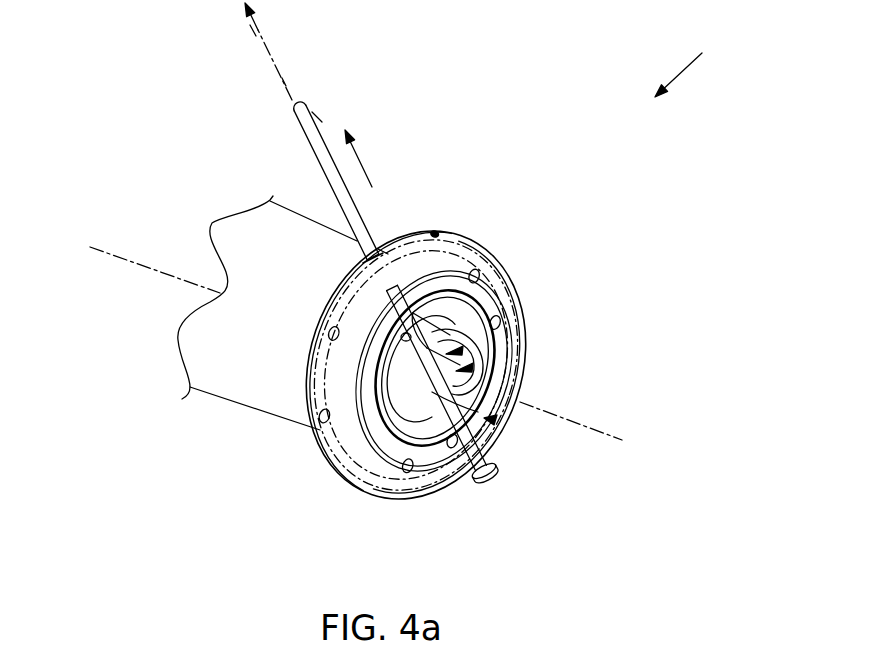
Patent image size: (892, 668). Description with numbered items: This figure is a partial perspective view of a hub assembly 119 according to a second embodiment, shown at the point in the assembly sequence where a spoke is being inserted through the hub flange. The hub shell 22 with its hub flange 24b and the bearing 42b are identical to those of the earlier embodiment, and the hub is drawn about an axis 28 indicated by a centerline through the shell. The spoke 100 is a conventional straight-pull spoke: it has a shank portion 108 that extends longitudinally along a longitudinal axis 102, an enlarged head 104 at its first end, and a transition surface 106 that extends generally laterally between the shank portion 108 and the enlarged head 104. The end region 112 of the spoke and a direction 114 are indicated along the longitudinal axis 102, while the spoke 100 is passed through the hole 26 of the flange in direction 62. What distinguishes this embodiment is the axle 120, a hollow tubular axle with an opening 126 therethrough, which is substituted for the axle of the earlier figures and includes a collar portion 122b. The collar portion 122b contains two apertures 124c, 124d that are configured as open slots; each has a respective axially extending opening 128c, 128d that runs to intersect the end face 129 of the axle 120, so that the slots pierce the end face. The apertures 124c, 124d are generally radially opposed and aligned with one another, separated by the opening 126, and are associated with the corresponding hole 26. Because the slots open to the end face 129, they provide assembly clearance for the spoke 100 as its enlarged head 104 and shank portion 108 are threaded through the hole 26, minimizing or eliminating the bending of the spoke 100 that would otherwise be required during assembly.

The hub shell 22 is at (238, 380).
The flange 24b is at (480, 237).
The hole 26 is at (375, 255).
The longitudinal axis 28 is at (607, 433).
The bearing 42b is at (411, 400).
The direction 62 is at (363, 167).
The spoke 100 is at (317, 117).
The longitudinal axis 102 is at (277, 55).
The enlarged head 104 is at (480, 480).
The transition surface 106 is at (500, 470).
The shank portion 108 is at (308, 140).
The rod end 112 is at (282, 78).
The direction arrow 114 is at (250, 25).
The hub assembly 119 is at (699, 64).
The axle 120 is at (430, 442).
The collar portion 122b is at (393, 432).
The aperture 124c is at (422, 315).
The aperture 124d is at (480, 415).
The opening 126 is at (475, 397).
The axially extending opening 128c is at (468, 370).
The axially extending opening 128d is at (495, 423).
The end face 129 is at (483, 351).